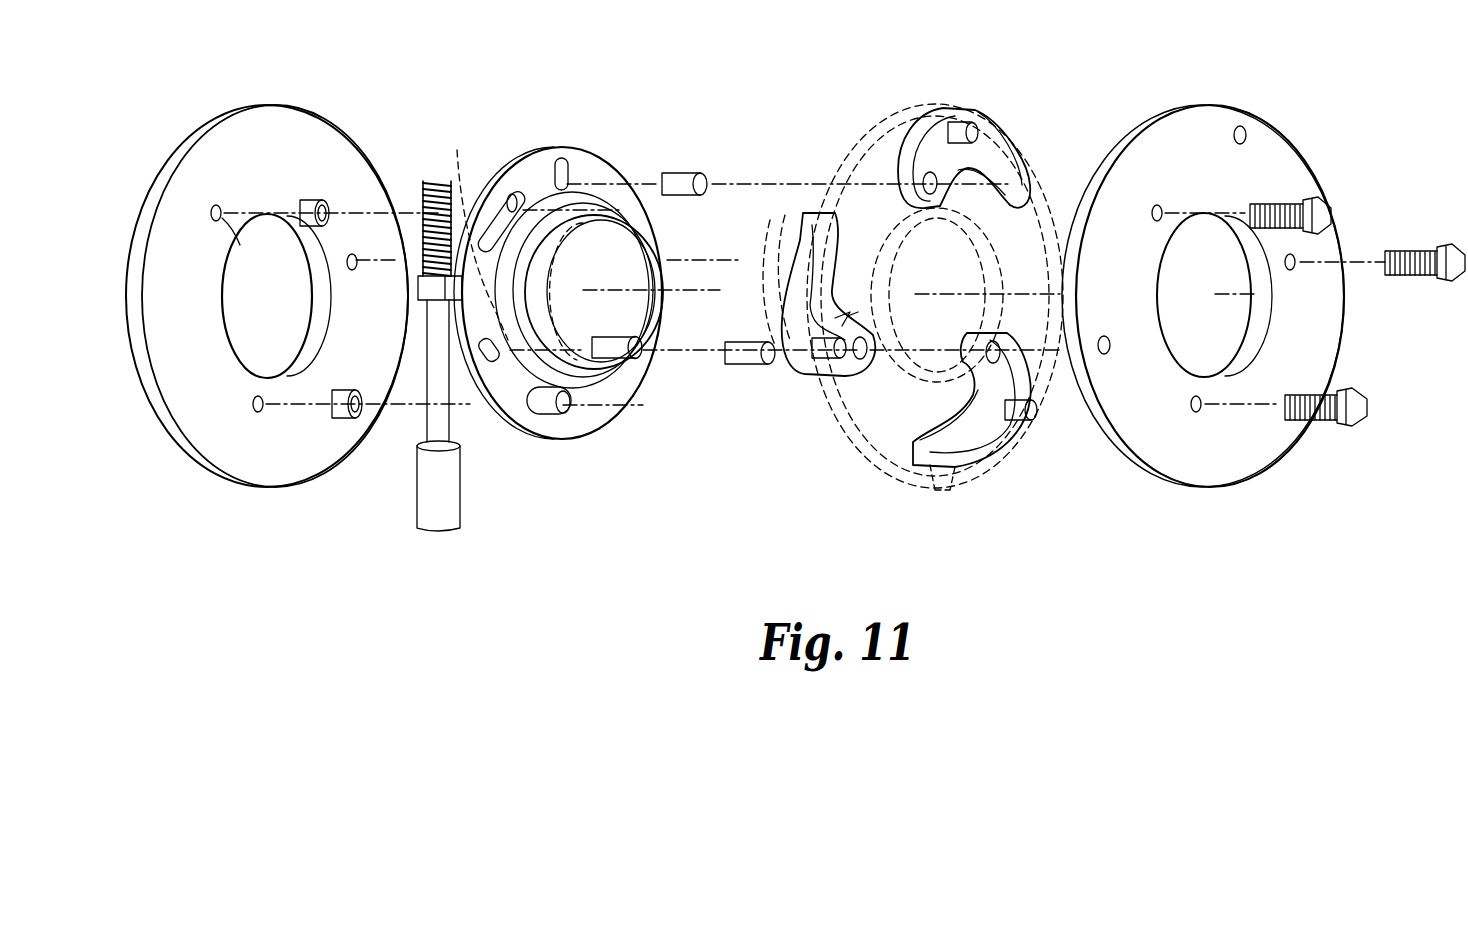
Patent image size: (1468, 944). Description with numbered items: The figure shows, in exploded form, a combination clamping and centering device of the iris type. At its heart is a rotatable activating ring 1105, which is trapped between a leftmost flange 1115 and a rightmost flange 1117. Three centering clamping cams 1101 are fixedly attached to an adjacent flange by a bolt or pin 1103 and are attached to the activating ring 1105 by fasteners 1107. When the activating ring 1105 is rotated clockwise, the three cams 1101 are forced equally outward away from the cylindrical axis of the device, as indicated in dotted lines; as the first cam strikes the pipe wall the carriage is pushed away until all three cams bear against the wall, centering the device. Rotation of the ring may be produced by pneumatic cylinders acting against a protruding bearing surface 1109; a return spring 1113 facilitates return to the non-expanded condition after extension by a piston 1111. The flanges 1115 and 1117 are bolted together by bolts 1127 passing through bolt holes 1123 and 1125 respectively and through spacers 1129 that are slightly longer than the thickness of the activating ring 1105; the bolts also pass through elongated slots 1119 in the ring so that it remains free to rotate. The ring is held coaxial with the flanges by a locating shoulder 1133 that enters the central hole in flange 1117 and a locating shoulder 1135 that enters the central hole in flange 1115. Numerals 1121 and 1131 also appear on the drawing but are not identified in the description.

The centering clamping cam 1101 is at (1013, 187).
The bolt or pin 1103 is at (835, 380).
The rotatable activating ring 1105 is at (533, 148).
The fasteners 1107 is at (693, 178).
The protruding bearing surface 1109 is at (425, 318).
The piston 1111 is at (428, 420).
The return spring 1113 is at (428, 190).
The leftmost flange 1115 is at (203, 420).
The rightmost flange 1117 is at (888, 125).
The elongated slots 1119 is at (512, 205).
The slot 1121 is at (568, 178).
The bolt holes 1123 is at (262, 398).
The bolt holes 1125 is at (1157, 205).
The bolts 1127 is at (1393, 253).
The spacers 1129 is at (305, 200).
The hub 1131 is at (583, 196).
The locating shoulder 1133 is at (648, 238).
The locating shoulder 1135 is at (465, 232).